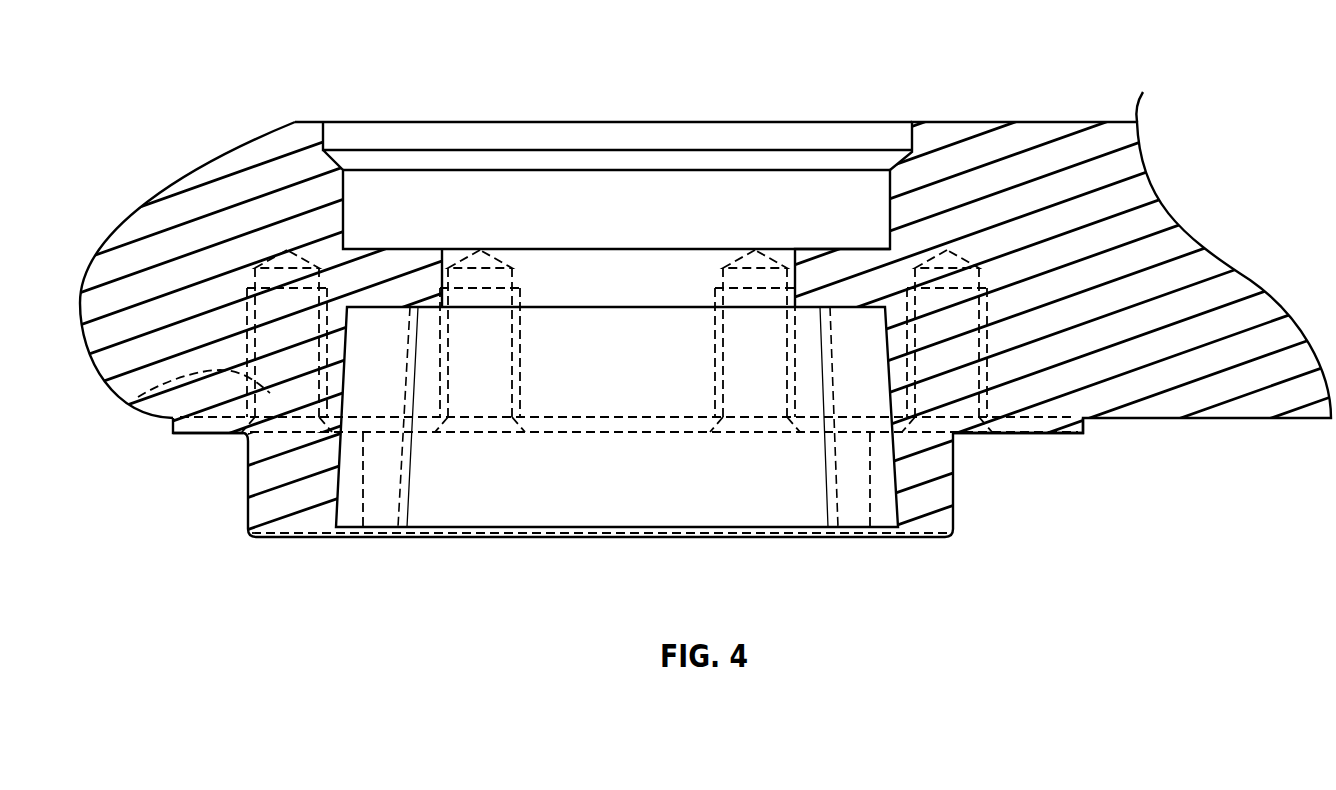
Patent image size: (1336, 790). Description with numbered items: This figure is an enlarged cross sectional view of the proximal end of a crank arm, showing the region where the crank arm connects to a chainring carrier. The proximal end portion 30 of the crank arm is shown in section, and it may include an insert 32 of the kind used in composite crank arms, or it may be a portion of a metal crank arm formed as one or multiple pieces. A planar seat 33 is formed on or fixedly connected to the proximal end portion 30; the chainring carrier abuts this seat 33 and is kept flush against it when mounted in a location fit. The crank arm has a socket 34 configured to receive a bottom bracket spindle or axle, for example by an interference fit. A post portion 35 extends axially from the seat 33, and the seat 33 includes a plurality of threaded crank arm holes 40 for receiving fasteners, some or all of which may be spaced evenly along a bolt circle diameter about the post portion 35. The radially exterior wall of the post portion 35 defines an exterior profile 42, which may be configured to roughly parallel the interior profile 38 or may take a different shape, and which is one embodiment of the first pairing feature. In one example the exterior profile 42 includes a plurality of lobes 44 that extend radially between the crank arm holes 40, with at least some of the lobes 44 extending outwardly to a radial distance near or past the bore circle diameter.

The proximal end portion 30 is at (1027, 137).
The insert 32 is at (950, 540).
The seat 33 is at (195, 437).
The socket 34 is at (433, 503).
The post portion 35 is at (290, 540).
The interior profile 38 is at (823, 503).
The crank arm holes 40 is at (138, 397).
The exterior profile 42 is at (955, 497).
The lobes 44 is at (248, 515).